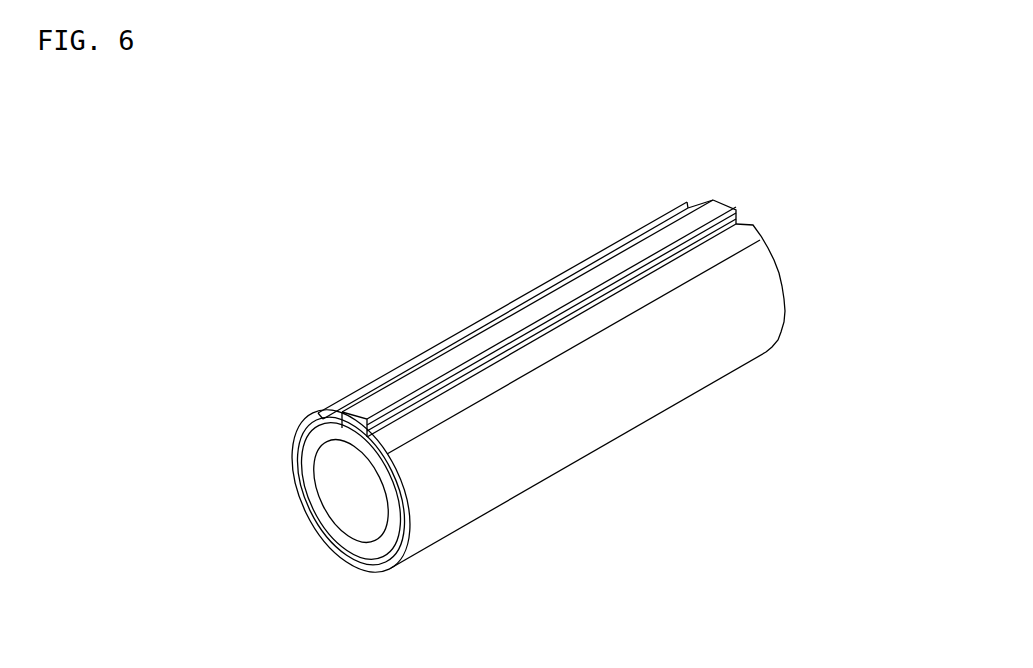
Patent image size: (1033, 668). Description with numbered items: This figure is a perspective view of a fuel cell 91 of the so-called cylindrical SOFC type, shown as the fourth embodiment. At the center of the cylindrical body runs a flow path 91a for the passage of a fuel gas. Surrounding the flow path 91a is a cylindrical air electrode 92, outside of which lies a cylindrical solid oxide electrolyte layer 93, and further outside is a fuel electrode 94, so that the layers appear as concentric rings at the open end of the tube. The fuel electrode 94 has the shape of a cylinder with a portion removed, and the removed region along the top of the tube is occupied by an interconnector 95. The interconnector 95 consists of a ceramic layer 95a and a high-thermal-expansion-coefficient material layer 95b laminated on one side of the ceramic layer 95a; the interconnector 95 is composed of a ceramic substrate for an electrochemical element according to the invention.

The fuel cell 91 is at (360, 288).
The flow path 91a is at (363, 508).
The air electrode 92 is at (331, 493).
The solid oxide electrolyte layer 93 is at (383, 566).
The fuel electrode 94 is at (492, 498).
The interconnector 95 is at (558, 228).
The ceramic layer 95a is at (420, 406).
The high-thermal-expansion-coefficient material layer 95b is at (552, 302).